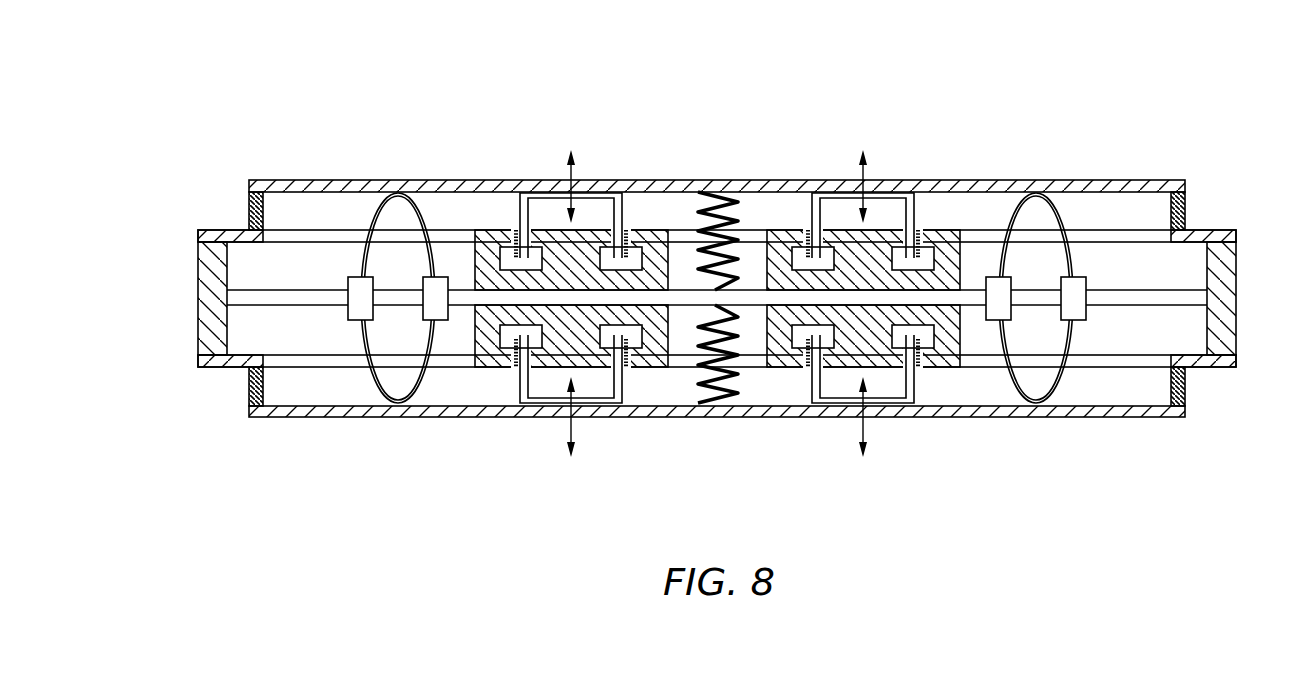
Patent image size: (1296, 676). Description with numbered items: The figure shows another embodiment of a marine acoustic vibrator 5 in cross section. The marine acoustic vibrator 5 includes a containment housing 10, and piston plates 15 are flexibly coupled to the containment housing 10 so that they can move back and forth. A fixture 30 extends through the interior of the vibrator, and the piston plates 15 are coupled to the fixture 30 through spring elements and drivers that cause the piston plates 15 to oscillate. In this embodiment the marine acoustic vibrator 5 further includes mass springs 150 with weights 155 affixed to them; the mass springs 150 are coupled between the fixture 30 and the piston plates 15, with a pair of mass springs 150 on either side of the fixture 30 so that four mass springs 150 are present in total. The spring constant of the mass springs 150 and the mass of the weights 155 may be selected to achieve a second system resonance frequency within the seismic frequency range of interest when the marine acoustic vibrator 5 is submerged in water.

The marine acoustic vibrator 5 is at (681, 253).
The containment housing 10 is at (198, 263).
The piston plates 15 is at (703, 180).
The fixture 30 is at (300, 290).
The mass springs 150 is at (423, 318).
The weights 155 is at (373, 318).